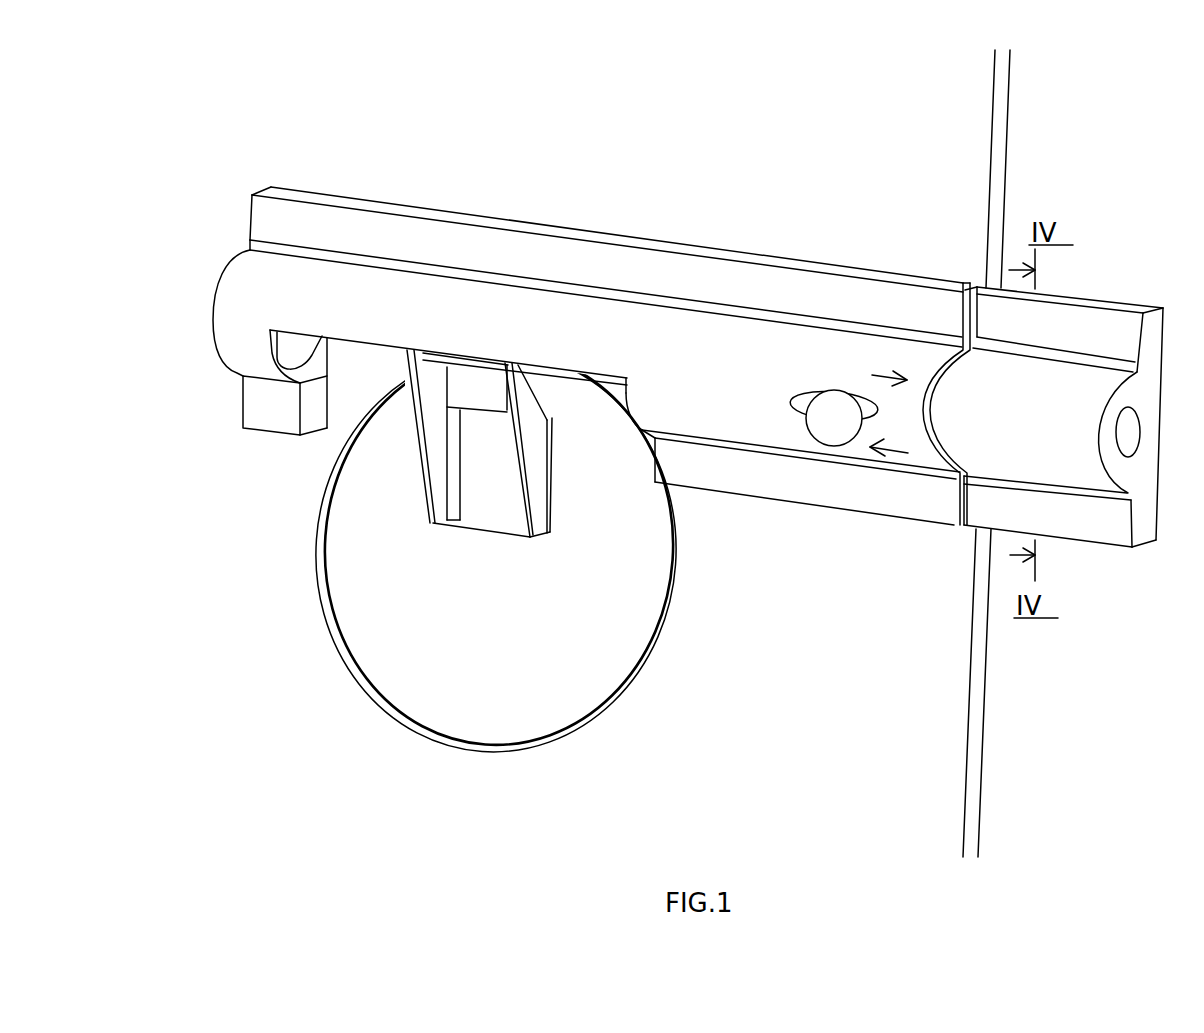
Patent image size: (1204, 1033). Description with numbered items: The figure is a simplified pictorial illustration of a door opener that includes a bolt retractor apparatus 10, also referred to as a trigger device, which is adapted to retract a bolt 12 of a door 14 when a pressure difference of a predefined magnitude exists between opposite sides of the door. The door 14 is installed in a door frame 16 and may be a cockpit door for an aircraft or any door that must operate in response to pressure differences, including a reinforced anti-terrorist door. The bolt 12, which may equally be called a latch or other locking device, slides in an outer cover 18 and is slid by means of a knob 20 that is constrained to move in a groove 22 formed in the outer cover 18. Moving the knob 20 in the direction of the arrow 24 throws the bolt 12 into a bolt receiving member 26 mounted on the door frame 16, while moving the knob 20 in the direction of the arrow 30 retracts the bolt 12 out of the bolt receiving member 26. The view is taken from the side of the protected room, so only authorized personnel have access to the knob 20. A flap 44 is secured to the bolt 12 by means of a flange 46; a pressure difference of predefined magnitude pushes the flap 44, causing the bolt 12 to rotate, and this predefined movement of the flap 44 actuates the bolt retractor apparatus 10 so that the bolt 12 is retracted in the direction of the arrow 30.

The bolt retractor apparatus 10 is at (861, 690).
The bolt 12 is at (434, 433).
The door 14 is at (925, 185).
The door frame 16 is at (1099, 187).
The outer cover 18 is at (591, 349).
The knob 20 is at (791, 391).
The groove 22 is at (782, 395).
The arrow 24 is at (874, 523).
The bolt receiving member 26 is at (1072, 446).
The arrow 30 is at (905, 302).
The flap 44 is at (515, 551).
The flange 46 is at (550, 539).